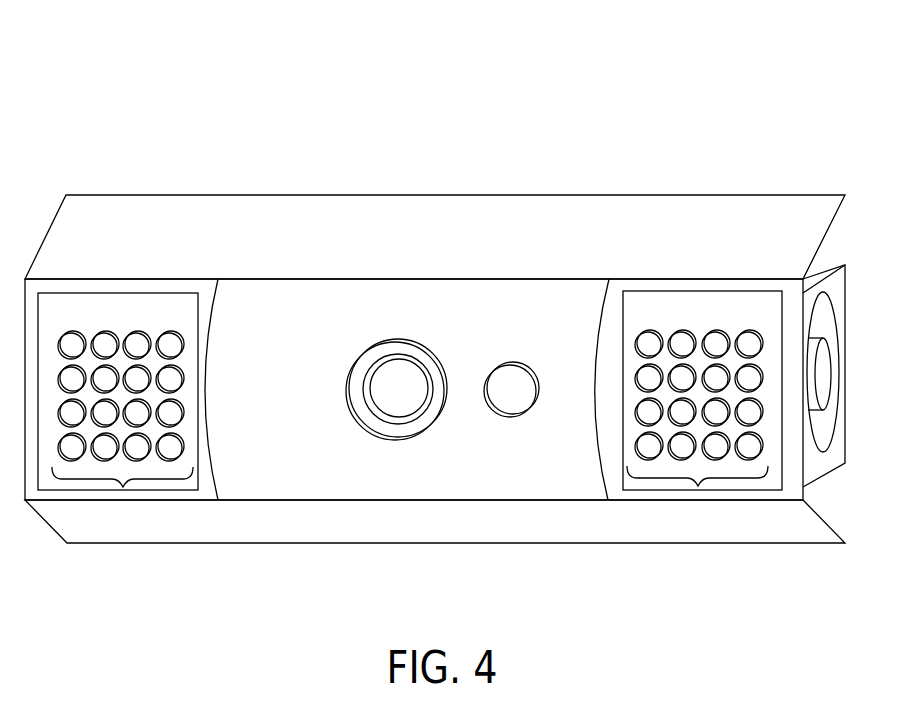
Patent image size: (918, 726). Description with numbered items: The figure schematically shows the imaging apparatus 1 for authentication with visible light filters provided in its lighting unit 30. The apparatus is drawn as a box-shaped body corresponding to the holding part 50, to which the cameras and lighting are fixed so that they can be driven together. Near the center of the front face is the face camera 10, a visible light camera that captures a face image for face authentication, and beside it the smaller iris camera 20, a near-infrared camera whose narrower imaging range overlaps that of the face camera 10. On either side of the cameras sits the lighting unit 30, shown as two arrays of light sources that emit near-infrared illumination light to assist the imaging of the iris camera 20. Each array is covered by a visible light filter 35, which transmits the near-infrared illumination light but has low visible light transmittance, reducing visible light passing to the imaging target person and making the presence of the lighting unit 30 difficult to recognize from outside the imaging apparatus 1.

The imaging apparatus for authentication 1 is at (435, 320).
The face camera 10 is at (397, 354).
The iris camera 20 is at (513, 362).
The lighting unit 30 is at (123, 488).
The visible light filter 35 is at (118, 293).
The holding part 50 is at (248, 195).